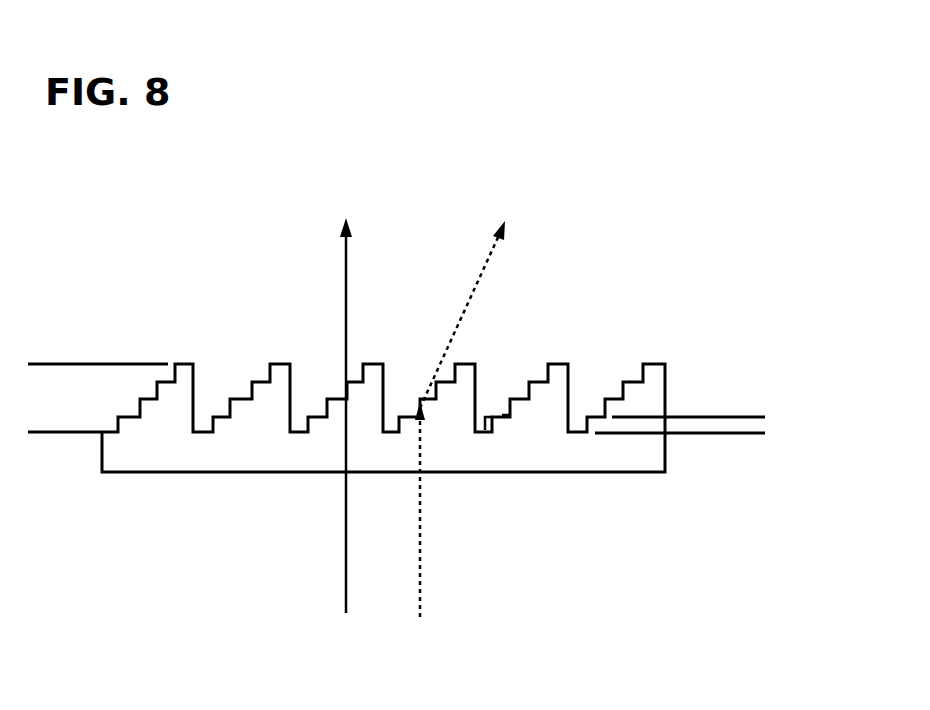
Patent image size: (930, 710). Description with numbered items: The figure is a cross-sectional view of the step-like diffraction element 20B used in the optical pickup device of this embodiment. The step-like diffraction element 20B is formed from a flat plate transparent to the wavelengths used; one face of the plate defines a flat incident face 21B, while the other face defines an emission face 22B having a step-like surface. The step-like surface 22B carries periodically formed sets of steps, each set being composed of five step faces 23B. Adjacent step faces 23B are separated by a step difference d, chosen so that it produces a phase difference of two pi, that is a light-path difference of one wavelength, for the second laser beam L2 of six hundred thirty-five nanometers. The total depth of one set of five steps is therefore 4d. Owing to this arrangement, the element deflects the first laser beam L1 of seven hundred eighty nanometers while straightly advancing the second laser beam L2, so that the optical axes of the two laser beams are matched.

The step-like diffraction element 20B is at (448, 335).
The flat incident face 21B is at (477, 473).
The emission face 22B is at (650, 365).
The step faces 23B is at (485, 430).
The first laser beam L1 is at (483, 276).
The second laser beam L2 is at (338, 298).
The total depth of the five steps 4d is at (65, 305).
The step difference d is at (717, 487).